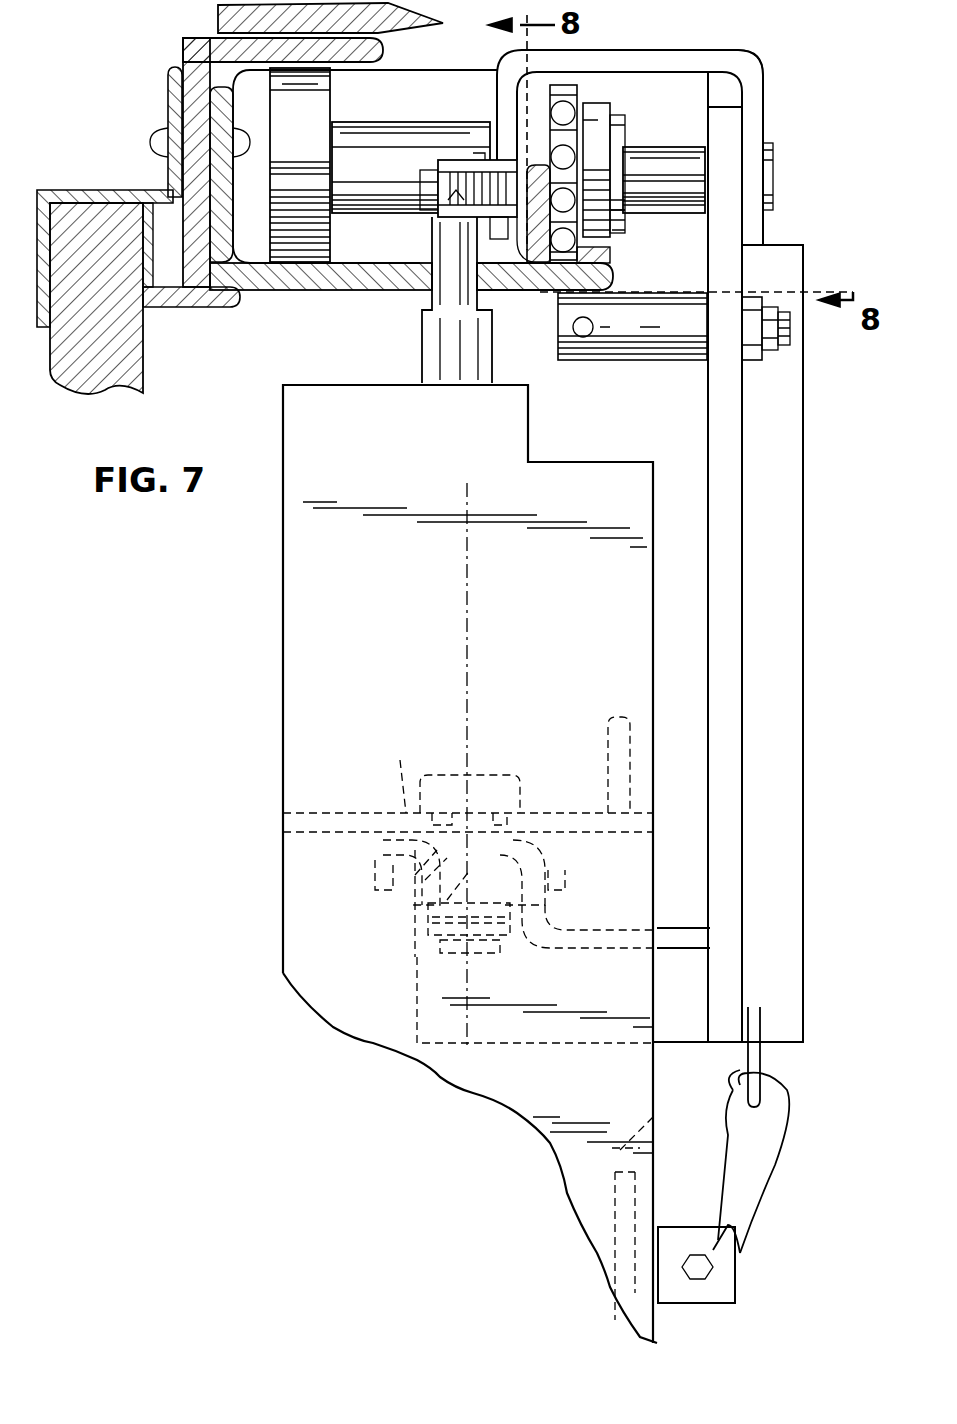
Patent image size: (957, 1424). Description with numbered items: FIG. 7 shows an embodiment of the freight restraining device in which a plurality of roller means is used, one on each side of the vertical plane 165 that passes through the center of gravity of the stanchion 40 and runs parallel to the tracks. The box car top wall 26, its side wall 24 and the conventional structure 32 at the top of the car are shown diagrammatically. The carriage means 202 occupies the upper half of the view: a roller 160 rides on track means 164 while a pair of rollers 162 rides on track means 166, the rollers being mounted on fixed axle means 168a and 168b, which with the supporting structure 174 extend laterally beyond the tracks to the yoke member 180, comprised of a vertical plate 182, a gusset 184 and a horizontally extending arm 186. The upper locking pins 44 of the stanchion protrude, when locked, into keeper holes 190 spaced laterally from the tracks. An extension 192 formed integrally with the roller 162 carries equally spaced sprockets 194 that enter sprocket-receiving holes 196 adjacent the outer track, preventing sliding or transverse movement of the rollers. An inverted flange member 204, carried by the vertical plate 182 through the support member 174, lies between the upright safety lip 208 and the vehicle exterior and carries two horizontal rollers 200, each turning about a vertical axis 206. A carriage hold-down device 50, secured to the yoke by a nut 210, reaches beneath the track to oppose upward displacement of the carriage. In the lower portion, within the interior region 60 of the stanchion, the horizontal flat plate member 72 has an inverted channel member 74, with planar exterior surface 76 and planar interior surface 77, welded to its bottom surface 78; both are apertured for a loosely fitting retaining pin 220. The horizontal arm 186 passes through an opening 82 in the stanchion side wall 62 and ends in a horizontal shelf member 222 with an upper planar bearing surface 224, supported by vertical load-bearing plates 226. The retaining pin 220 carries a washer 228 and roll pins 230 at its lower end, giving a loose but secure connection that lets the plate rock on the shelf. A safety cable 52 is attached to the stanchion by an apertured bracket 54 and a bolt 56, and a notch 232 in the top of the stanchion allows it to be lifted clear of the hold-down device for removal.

The side wall 24 is at (143, 350).
The top wall 26 is at (232, 22).
The conventional structure 32 is at (170, 88).
The stanchion 40 is at (300, 650).
The upper locking pins 44 is at (436, 247).
The carriage hold-down device 50 is at (617, 360).
The safety cable 52 is at (785, 1158).
The apertured bracket 54 is at (728, 1278).
The bolt 56 is at (697, 1267).
The chamber 60 is at (562, 661).
The side wall 62 is at (630, 768).
The horizontal flat plate member 72 is at (305, 815).
The channel member 74 is at (568, 874).
The planar exterior surface 76 is at (400, 780).
The planar interior surface 77 is at (380, 866).
The bottom surface 78 is at (320, 835).
The opening 82 is at (655, 848).
The roller 160 is at (322, 90).
The rollers 162 is at (613, 110).
The track means 164 is at (306, 291).
The vertical plane 165 is at (470, 592).
The track means 166 is at (610, 258).
The axle means 168a is at (398, 122).
The axle means 168b is at (668, 147).
The supporting structure 174 is at (672, 50).
The yoke member 180 is at (815, 610).
The vertical plate 182 is at (722, 437).
The gusset 184 is at (800, 732).
The horizontal arm 186 is at (588, 927).
The keeper holes 190 is at (478, 277).
The extension 192 is at (577, 120).
The sprockets 194 is at (560, 155).
The sprocket-receiving holes 196 is at (595, 268).
The horizontal rollers 200 is at (430, 187).
The carriage 202 is at (760, 62).
The inverted flange member 204 is at (497, 100).
The vertical axis 206 is at (480, 157).
The upright safety lip 208 is at (613, 213).
The nut 210 is at (770, 357).
The retaining pin 220 is at (445, 773).
The horizontal shelf member 222 is at (418, 903).
The bearing surface 224 is at (522, 835).
The vertical load-bearing plates 226 is at (543, 1027).
The washer 228 is at (503, 950).
The roll pins 230 is at (420, 960).
The notch 232 is at (528, 440).